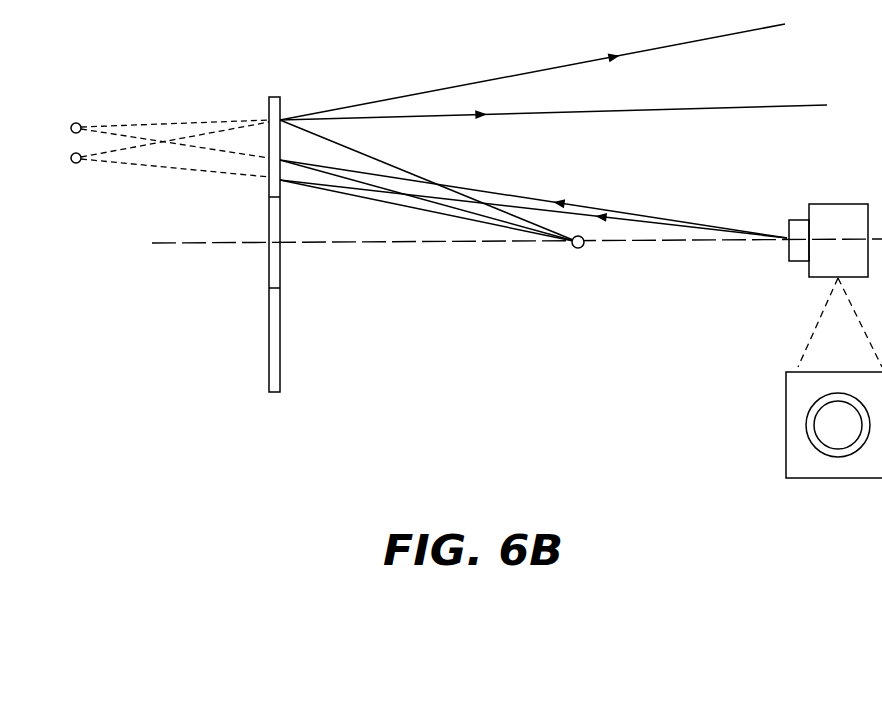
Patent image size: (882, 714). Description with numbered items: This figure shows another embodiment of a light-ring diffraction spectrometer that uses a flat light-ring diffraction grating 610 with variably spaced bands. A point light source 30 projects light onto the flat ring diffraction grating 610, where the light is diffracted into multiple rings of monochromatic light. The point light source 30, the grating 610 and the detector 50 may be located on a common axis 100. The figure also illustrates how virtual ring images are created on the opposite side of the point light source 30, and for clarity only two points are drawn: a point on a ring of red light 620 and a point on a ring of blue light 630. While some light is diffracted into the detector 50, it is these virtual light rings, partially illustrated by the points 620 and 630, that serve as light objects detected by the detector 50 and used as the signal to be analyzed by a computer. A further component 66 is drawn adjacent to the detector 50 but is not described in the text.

The point light source 30 is at (583, 247).
The detector 50 is at (813, 267).
The control unit 66 is at (808, 468).
The common axis 100 is at (208, 243).
The flat light-ring diffraction grating 610 is at (273, 95).
The point on a ring of red light 620 is at (76, 122).
The point on a ring of blue light 630 is at (76, 164).